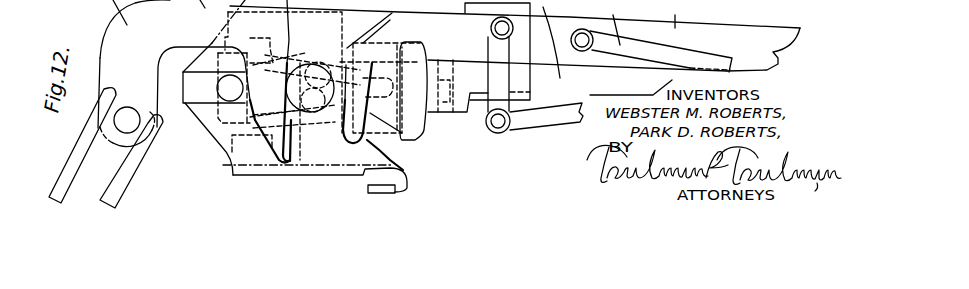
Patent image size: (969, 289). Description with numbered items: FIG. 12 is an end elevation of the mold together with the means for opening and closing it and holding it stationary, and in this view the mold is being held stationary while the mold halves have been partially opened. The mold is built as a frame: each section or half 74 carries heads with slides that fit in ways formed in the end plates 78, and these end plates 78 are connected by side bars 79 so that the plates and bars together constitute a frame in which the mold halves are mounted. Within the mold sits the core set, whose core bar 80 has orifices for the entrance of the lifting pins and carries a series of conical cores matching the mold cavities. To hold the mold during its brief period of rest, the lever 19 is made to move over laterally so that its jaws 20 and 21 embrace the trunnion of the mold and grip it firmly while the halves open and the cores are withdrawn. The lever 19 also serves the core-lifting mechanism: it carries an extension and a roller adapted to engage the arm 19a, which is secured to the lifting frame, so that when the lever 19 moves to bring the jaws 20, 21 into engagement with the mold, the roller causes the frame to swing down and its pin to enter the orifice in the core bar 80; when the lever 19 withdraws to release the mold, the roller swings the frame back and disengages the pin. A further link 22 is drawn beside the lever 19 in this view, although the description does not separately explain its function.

The arm 19a is at (130, 107).
The lever 19 is at (651, 50).
The core bar 80 is at (195, 102).
The end plate 78 is at (220, 167).
The jaw 20 is at (278, 168).
The mold section or half 74 is at (303, 170).
The jaw 21 is at (337, 170).
The side bar 79 is at (368, 188).
The link 22 is at (527, 124).